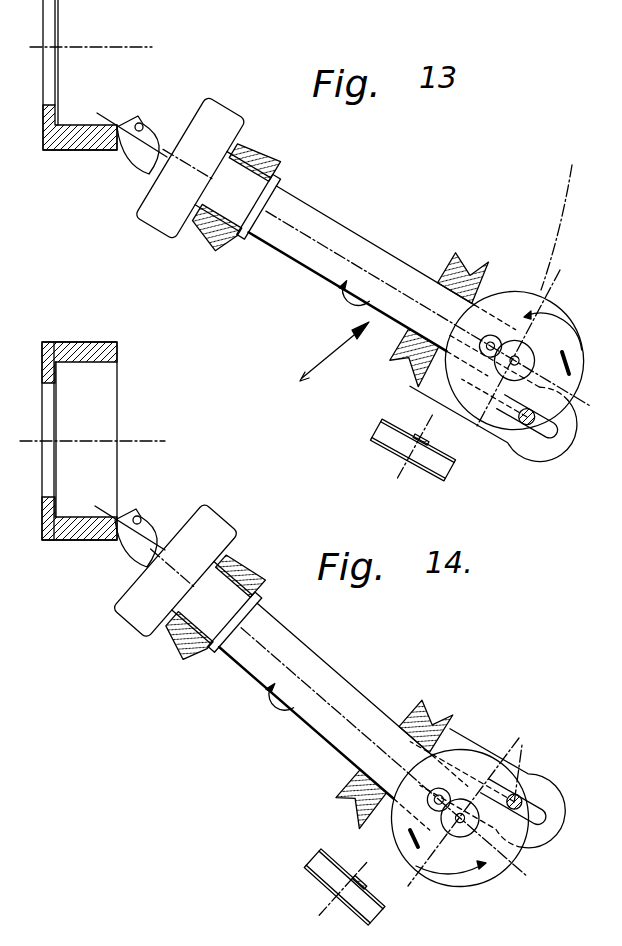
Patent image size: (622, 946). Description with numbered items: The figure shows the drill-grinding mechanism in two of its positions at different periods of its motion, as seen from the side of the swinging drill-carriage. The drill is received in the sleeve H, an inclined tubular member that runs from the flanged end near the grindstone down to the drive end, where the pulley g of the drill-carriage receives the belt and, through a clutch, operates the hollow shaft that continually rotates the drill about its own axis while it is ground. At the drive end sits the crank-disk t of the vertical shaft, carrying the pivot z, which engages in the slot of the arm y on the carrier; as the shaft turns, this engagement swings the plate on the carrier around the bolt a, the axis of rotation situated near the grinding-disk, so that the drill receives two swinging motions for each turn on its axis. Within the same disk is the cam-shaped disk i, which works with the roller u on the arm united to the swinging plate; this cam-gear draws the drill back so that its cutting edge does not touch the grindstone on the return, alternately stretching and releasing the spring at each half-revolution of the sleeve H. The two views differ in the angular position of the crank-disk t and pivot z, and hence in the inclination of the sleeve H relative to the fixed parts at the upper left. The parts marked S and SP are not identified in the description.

In FIG. 13, the housing bracket S is at (91, 75).
In FIG. 14, the housing bracket S is at (92, 346).
In FIG. 13, the bolt a is at (143, 126).
In FIG. 14, the bolt a is at (141, 519).
In FIG. 13, the flange plate SP is at (222, 117).
In FIG. 14, the flange plate SP is at (208, 505).
In FIG. 13, the sleeve H is at (374, 277).
In FIG. 14, the sleeve H is at (339, 713).
In FIG. 13, the crank-disk t is at (574, 333).
In FIG. 14, the crank-disk t is at (473, 758).
In FIG. 13, the cam-shaped disk i is at (524, 357).
In FIG. 14, the cam-shaped disk i is at (462, 822).
In FIG. 13, the roller u is at (490, 337).
In FIG. 14, the roller u is at (432, 803).
In FIG. 13, the arm y is at (550, 447).
In FIG. 14, the arm y is at (557, 793).
In FIG. 13, the pivot z is at (523, 425).
In FIG. 14, the pivot z is at (524, 785).
In FIG. 13, the pulley g is at (444, 463).
In FIG. 14, the pulley g is at (327, 862).